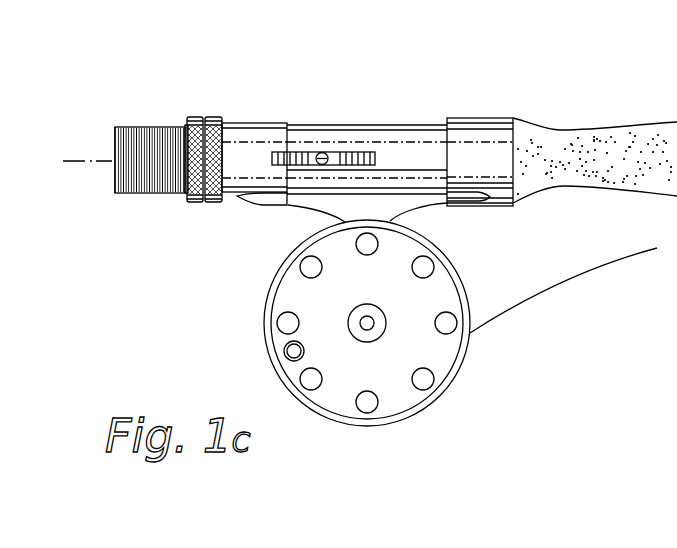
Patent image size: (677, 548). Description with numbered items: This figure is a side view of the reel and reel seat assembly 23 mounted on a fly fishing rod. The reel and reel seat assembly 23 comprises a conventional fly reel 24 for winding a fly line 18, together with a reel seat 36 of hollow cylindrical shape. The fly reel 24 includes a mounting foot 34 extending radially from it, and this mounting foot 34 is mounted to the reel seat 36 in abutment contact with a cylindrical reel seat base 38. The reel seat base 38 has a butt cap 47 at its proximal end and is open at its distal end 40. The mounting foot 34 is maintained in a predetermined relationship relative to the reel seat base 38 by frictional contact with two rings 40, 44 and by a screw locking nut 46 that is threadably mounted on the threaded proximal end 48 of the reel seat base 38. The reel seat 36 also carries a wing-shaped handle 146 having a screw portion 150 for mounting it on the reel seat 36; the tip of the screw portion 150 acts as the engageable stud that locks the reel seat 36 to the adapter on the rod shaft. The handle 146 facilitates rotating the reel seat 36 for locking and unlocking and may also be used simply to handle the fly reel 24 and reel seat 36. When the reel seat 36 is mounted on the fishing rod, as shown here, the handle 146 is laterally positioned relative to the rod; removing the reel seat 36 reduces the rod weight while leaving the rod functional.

The fly line 18 is at (534, 305).
The reel and reel seat assembly 23 is at (204, 266).
The fly reel 24 is at (447, 414).
The mounting foot 34 is at (337, 203).
The reel seat 36 is at (409, 103).
The reel seat base 38 is at (428, 138).
The ring 40 is at (502, 195).
The ring 44 is at (277, 124).
The screw locking nut 46 is at (188, 116).
The butt cap 47 is at (112, 180).
The threaded proximal end 48 is at (157, 172).
The handle 146 is at (323, 150).
The screw portion 150 is at (373, 150).